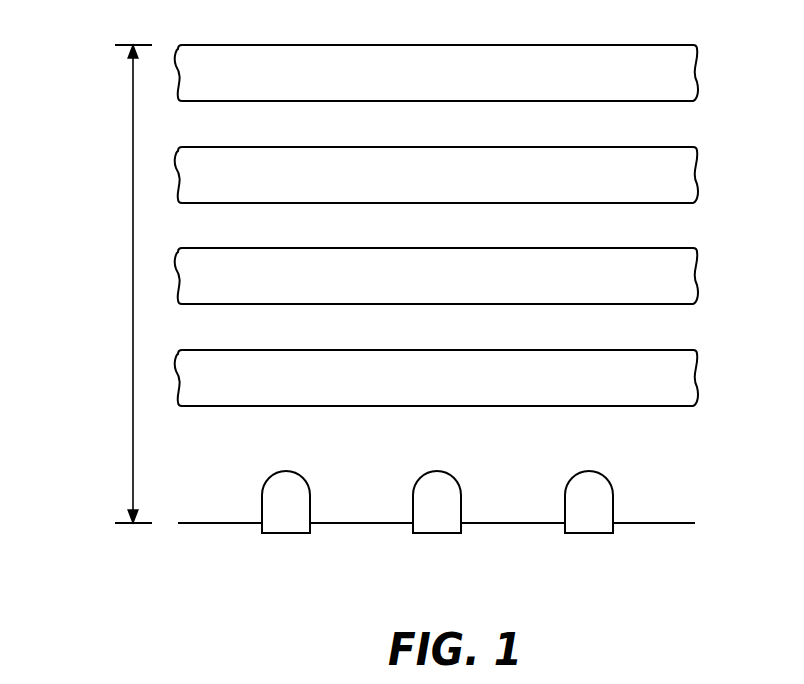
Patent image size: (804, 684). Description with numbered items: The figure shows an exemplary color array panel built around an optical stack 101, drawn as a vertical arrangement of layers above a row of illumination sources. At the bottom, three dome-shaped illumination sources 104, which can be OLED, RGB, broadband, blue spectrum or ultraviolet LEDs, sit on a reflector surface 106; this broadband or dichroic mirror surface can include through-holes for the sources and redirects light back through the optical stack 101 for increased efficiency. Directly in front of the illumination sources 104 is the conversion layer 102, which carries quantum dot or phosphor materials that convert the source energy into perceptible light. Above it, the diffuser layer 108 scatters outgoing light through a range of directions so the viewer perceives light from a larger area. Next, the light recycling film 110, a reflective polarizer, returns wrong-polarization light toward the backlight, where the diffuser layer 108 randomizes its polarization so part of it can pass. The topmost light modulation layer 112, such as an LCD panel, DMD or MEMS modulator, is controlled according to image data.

The optical stack 101 is at (133, 310).
The conversion layer 102 is at (465, 390).
The illumination sources 104 is at (286, 533).
The reflector surface 106 is at (643, 522).
The diffuser layer 108 is at (465, 288).
The light recycling film 110 is at (465, 188).
The light modulation layer 112 is at (465, 86).